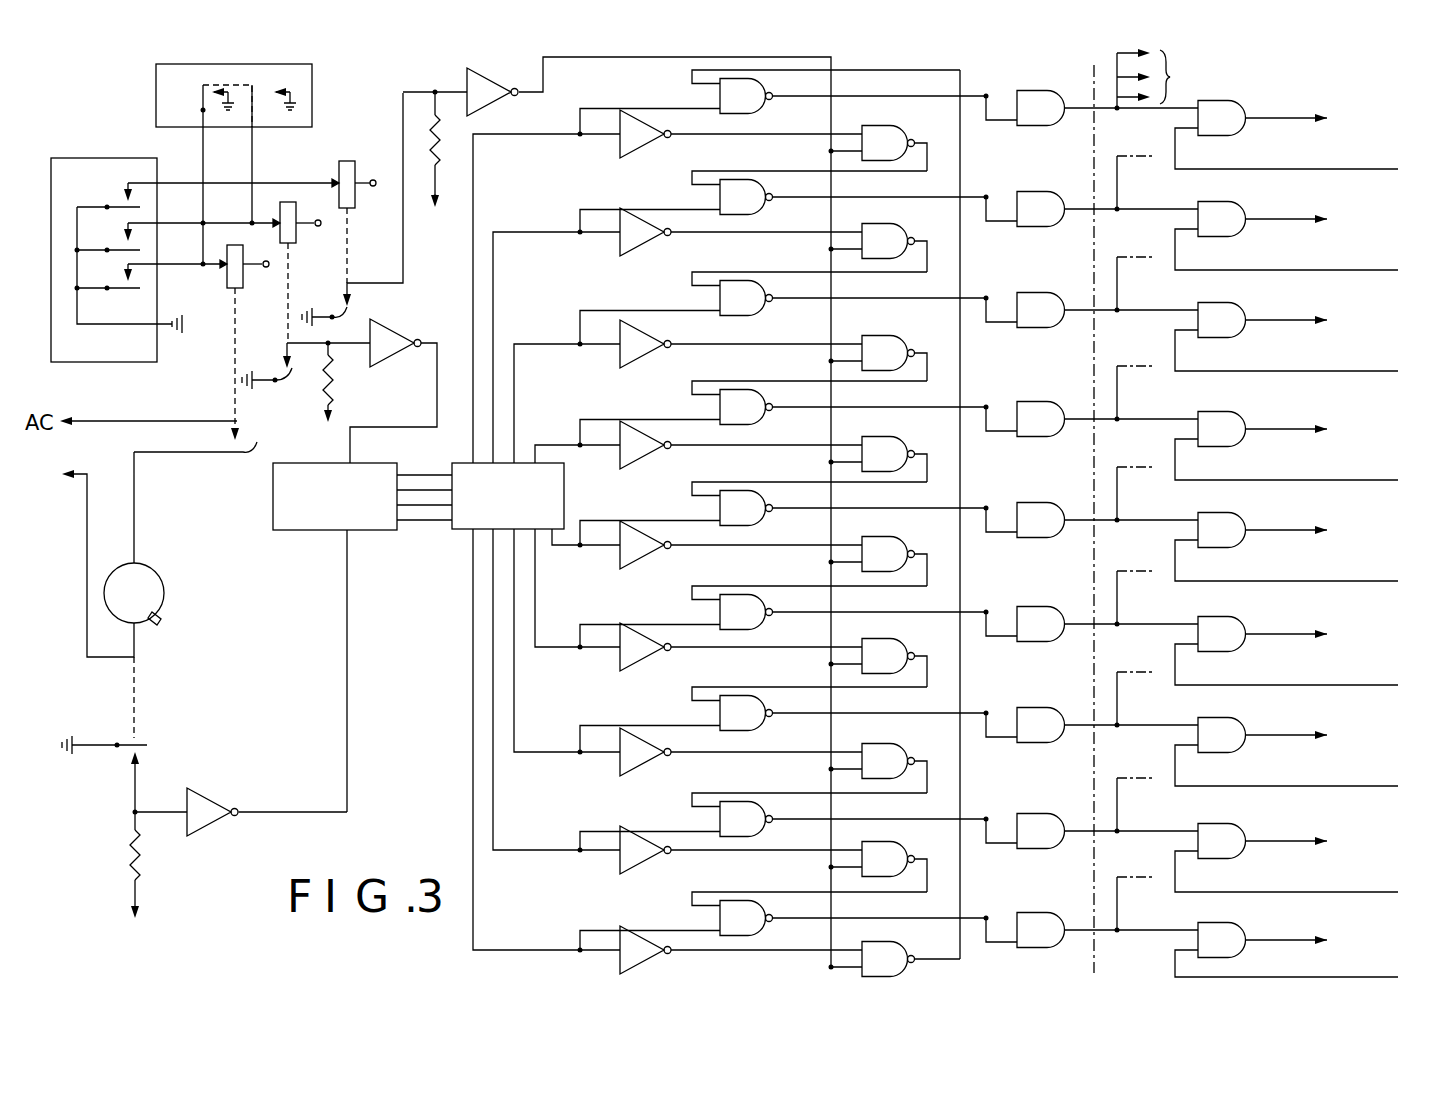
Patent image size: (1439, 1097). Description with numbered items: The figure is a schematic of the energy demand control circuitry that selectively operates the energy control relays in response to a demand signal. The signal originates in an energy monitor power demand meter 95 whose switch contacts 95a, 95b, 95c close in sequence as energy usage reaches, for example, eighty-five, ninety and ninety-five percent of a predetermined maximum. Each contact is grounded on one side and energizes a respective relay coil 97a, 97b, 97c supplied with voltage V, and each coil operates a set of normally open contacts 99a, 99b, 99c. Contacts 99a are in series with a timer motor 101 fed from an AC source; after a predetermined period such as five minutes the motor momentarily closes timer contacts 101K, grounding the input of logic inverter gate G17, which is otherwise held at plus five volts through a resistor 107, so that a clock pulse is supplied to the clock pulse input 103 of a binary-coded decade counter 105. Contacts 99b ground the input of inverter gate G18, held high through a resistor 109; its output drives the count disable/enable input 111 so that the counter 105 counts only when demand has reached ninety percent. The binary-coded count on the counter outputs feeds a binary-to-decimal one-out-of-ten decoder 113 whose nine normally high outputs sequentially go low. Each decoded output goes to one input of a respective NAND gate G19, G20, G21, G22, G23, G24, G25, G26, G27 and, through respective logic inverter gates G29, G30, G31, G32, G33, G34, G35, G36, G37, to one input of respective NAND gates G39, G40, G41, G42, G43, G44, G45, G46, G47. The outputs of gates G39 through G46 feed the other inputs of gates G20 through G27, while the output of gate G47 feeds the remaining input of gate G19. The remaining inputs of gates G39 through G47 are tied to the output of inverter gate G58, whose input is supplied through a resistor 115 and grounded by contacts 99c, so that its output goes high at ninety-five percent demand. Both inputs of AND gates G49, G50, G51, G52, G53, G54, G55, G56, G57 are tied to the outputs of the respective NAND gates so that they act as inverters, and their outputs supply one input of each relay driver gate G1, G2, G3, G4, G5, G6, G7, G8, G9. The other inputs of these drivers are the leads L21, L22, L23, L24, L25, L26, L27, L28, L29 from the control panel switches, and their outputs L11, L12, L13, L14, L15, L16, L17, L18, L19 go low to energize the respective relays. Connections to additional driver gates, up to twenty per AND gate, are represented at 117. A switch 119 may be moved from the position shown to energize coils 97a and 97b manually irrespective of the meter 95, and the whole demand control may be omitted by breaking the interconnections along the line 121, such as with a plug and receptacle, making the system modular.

The energy monitor power demand meter 95 is at (82, 158).
The switch contact 95a is at (140, 288).
The switch contact 95b is at (140, 250).
The switch contact 95c is at (140, 207).
The relay coil 97a is at (242, 288).
The relay coil 97b is at (280, 205).
The relay coil 97c is at (339, 165).
The relay contacts 99a is at (256, 445).
The relay contacts 99b is at (292, 380).
The relay contacts 99c is at (344, 310).
The timer motor 101 is at (158, 577).
The timer contacts 101K is at (138, 743).
The clock pulse input 103 is at (350, 540).
The binary-coded decade counter 105 is at (272, 518).
The resistor 107 is at (146, 861).
The resistor 109 is at (340, 372).
The count disable/enable input 111 is at (351, 463).
The binary-to-decimal one-out-of-ten decoder 113 is at (460, 530).
The resistor 115 is at (442, 160).
The circuit connections to additional gates 117 is at (1166, 78).
The switch 119 is at (203, 85).
The line 121 is at (1096, 971).
The relay driver gate G1 is at (1238, 101).
The relay driver gate G2 is at (1238, 202).
The relay driver gate G3 is at (1238, 303).
The relay driver gate G4 is at (1238, 412).
The relay driver gate G5 is at (1238, 513).
The relay driver gate G6 is at (1238, 617).
The relay driver gate G7 is at (1238, 718).
The relay driver gate G8 is at (1238, 824).
The relay driver gate G9 is at (1238, 923).
The logic inverter gate G17 is at (205, 800).
The logic inverter gate G18 is at (400, 336).
The NAND gate G19 is at (766, 83).
The NAND gate G20 is at (766, 184).
The NAND gate G21 is at (766, 285).
The NAND gate G22 is at (766, 394).
The NAND gate G23 is at (766, 495).
The NAND gate G24 is at (766, 599).
The NAND gate G25 is at (766, 700).
The NAND gate G26 is at (766, 806).
The NAND gate G27 is at (766, 905).
The logic inverter gate G29 is at (642, 121).
The logic inverter gate G30 is at (642, 219).
The logic inverter gate G31 is at (642, 331).
The logic inverter gate G32 is at (642, 432).
The logic inverter gate G33 is at (642, 532).
The logic inverter gate G34 is at (642, 634).
The logic inverter gate G35 is at (642, 739).
The logic inverter gate G36 is at (642, 837).
The logic inverter gate G37 is at (642, 937).
The NAND gate G39 is at (893, 131).
The NAND gate G40 is at (893, 229).
The NAND gate G41 is at (893, 341).
The NAND gate G42 is at (893, 442).
The NAND gate G43 is at (893, 542).
The NAND gate G44 is at (893, 644).
The NAND gate G45 is at (893, 749).
The NAND gate G46 is at (893, 847).
The NAND gate G47 is at (893, 947).
The AND gate G49 is at (1062, 76).
The AND gate G50 is at (1062, 177).
The AND gate G51 is at (1062, 278).
The AND gate G52 is at (1062, 387).
The AND gate G53 is at (1062, 488).
The AND gate G54 is at (1062, 592).
The AND gate G55 is at (1062, 693).
The AND gate G56 is at (1062, 799).
The AND gate G57 is at (1062, 898).
The logic inverter gate G58 is at (467, 76).
The output lead L11 is at (1297, 118).
The output lead L12 is at (1297, 219).
The output lead L13 is at (1297, 320).
The output lead L14 is at (1297, 429).
The output lead L15 is at (1297, 530).
The output lead L16 is at (1297, 634).
The output lead L17 is at (1297, 735).
The output lead L18 is at (1297, 841).
The output lead L19 is at (1297, 940).
The input lead L21 is at (1340, 169).
The input lead L22 is at (1340, 270).
The input lead L23 is at (1340, 371).
The input lead L24 is at (1340, 480).
The input lead L25 is at (1340, 581).
The input lead L26 is at (1340, 685).
The input lead L27 is at (1340, 786).
The input lead L28 is at (1340, 892).
The input lead L29 is at (1340, 977).